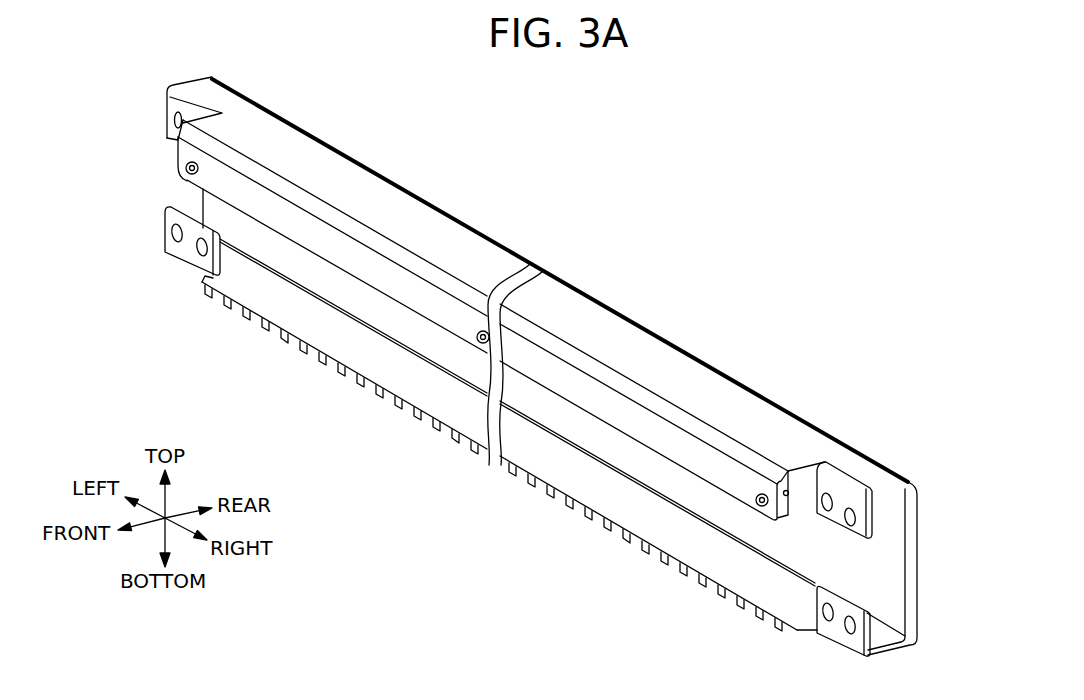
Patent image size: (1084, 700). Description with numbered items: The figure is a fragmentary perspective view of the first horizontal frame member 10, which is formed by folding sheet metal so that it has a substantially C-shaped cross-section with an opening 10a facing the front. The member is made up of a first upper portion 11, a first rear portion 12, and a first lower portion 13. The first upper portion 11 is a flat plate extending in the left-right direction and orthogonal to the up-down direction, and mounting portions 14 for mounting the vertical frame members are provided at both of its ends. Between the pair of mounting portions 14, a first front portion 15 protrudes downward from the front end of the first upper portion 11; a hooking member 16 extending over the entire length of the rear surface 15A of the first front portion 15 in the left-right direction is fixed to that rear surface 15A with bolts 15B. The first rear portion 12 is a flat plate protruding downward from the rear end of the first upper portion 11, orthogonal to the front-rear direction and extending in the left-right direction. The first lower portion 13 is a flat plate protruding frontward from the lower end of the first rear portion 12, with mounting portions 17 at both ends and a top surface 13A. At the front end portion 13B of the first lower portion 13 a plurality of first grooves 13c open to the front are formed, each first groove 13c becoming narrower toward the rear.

The first horizontal frame member 10 is at (723, 219).
The opening 10a is at (722, 573).
The first upper portion 11 is at (573, 303).
The first rear portion 12 is at (882, 570).
The first lower portion 13 is at (452, 410).
The top surface 13A is at (655, 522).
The front end portion 13B is at (570, 505).
The first groove 13c is at (528, 483).
The mounting portion 14 is at (178, 111).
The first front portion 15 is at (690, 453).
The rear surface 15A is at (788, 494).
The bolt 15B is at (762, 494).
The hooking member 16 is at (782, 486).
The mounting portion 17 is at (191, 249).